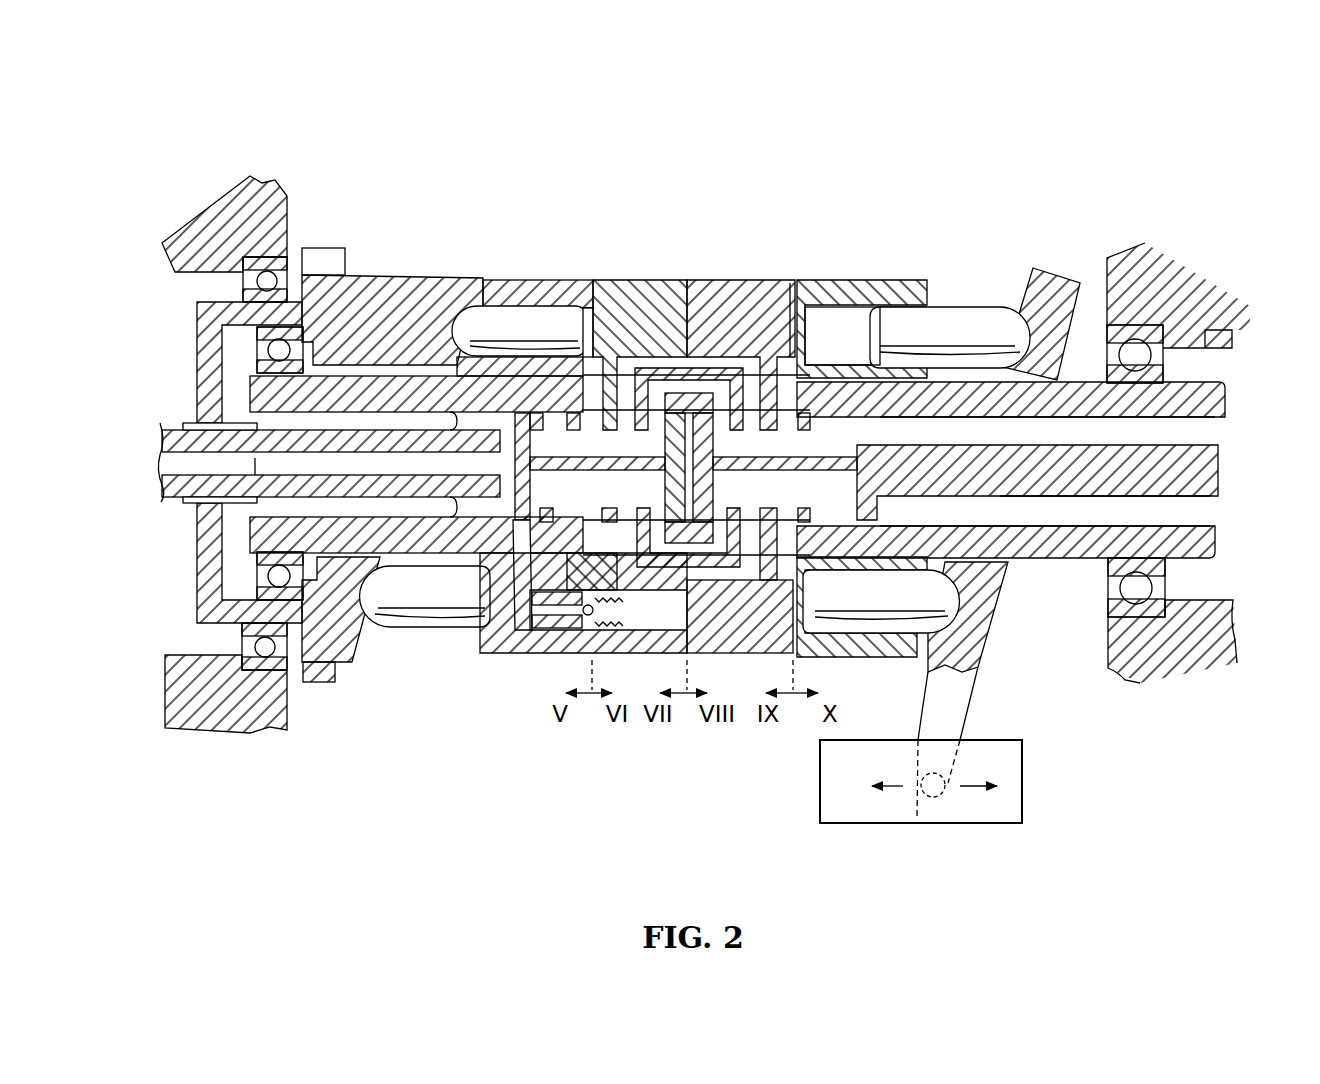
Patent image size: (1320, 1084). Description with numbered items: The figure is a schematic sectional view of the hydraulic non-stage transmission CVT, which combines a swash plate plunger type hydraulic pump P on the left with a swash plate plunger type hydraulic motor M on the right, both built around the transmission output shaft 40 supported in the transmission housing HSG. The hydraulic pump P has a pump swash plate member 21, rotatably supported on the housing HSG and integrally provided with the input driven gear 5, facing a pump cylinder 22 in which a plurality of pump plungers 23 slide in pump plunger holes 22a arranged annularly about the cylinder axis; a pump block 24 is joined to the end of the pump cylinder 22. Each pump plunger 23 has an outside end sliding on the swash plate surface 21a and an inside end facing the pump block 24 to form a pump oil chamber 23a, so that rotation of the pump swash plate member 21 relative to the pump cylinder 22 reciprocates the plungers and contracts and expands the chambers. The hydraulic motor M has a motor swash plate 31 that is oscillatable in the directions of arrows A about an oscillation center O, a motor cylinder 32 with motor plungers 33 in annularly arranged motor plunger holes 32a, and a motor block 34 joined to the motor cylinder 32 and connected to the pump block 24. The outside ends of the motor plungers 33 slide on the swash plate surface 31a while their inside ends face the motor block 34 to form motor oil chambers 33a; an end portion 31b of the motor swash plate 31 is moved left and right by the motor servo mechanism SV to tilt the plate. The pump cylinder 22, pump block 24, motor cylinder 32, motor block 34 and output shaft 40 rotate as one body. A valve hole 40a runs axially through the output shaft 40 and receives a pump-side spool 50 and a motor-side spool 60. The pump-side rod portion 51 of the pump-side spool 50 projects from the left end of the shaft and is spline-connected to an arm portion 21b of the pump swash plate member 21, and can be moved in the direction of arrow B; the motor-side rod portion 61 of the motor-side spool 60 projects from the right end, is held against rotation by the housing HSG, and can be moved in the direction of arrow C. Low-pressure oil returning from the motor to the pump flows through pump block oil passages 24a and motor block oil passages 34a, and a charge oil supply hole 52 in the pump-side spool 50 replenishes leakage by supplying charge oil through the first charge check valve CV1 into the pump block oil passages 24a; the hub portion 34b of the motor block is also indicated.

The input driven gear 5 is at (331, 249).
The pump swash plate member 21 is at (388, 280).
The swash plate surface 21a is at (362, 613).
The arm portion 21b is at (208, 346).
The pump cylinder 22 is at (540, 280).
The pump plunger holes 22a is at (503, 282).
The pump plungers 23 is at (472, 466).
The pump oil chamber 23a is at (580, 312).
The pump block 24 is at (677, 280).
The pump block oil passages 24a is at (620, 335).
The motor swash plate 31 is at (997, 641).
The swash plate surface 31a is at (1033, 276).
The end portion 31b is at (915, 826).
The motor cylinder 32 is at (858, 280).
The motor plunger holes 32a is at (893, 310).
The motor plungers 33 is at (916, 470).
The motor oil chamber 33a is at (857, 668).
The motor block 34 is at (750, 280).
The motor block oil passages 34a is at (733, 582).
The distribution valve body hub 34b is at (797, 285).
The transmission output shaft 40 is at (1222, 397).
The valve hole 40a is at (1215, 425).
The pump-side spool 50 is at (175, 499).
The pump-side rod portion 51 is at (174, 432).
The charge oil supply hole 52 is at (247, 494).
The motor-side spool 60 is at (1199, 507).
The motor-side rod portion 61 is at (1087, 478).
The transmission housing HSG is at (268, 202).
The motor servo mechanism SV is at (1008, 810).
The first charge check valve CV1 is at (533, 633).
The hydraulic pump P is at (403, 165).
The hydraulic motor M is at (894, 168).
The hydraulic non-stage transmission CVT is at (1078, 160).
The oscillation directions A is at (1010, 250).
The pump-side spool moving direction B is at (108, 462).
The motor-side spool moving direction C is at (1265, 475).
The oscillation center O is at (1004, 470).